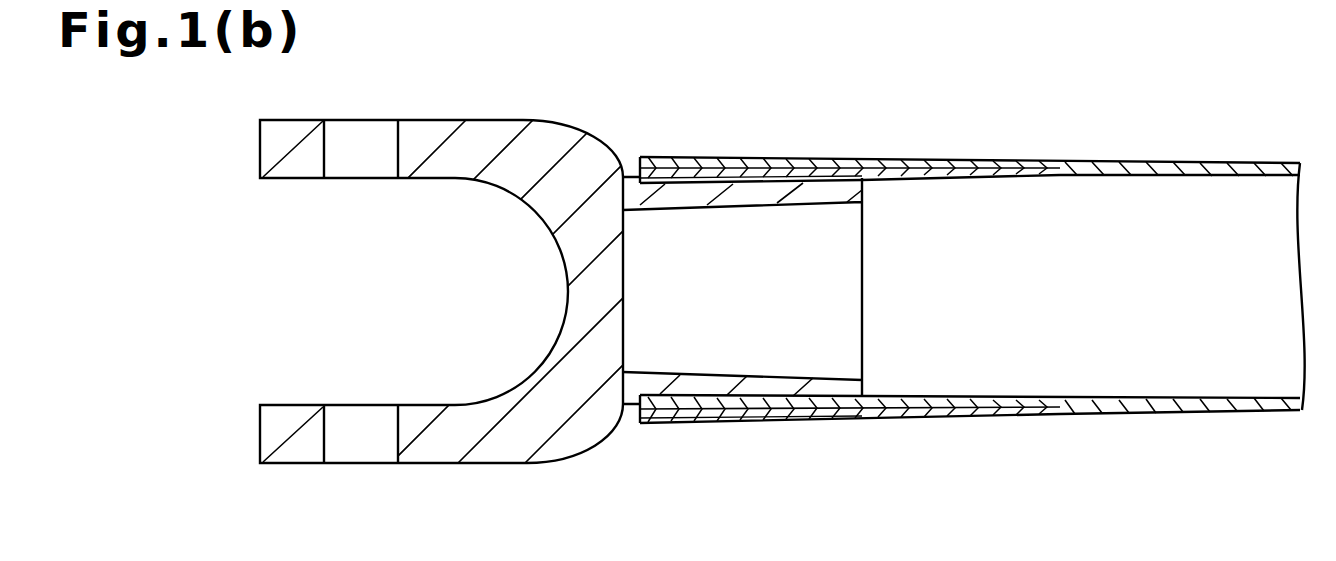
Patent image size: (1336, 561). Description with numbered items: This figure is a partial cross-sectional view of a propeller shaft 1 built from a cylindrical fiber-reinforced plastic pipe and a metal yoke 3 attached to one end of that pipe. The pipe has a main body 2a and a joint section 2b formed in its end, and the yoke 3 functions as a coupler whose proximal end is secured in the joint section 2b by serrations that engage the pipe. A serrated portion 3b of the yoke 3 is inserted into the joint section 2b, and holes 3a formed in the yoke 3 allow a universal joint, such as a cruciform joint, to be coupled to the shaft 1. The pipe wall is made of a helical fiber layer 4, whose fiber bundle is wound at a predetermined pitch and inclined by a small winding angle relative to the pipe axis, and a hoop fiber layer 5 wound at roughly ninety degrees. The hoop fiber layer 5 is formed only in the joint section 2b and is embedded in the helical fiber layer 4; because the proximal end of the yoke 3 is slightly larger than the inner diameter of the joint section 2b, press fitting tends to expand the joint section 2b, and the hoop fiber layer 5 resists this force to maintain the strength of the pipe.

The propeller shaft 1 is at (998, 129).
The main body 2a is at (1208, 166).
The joint section 2b is at (679, 156).
The yoke 3 is at (477, 133).
The hole 3a is at (327, 160).
The serrated portion 3b is at (670, 186).
The helical fiber layer 4 is at (846, 156).
The hoop fiber layer 5 is at (888, 176).